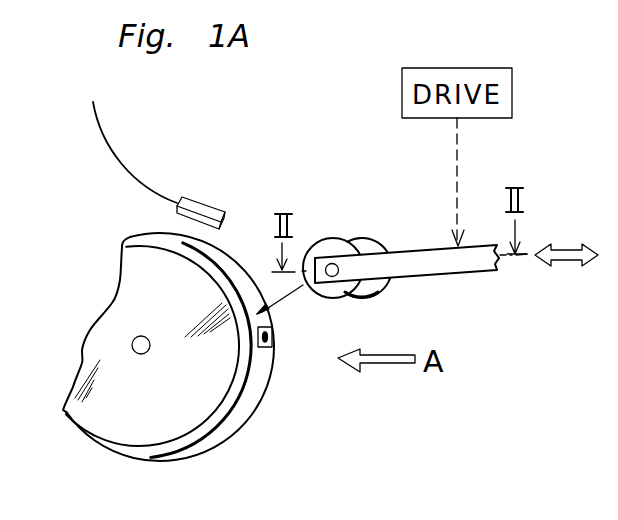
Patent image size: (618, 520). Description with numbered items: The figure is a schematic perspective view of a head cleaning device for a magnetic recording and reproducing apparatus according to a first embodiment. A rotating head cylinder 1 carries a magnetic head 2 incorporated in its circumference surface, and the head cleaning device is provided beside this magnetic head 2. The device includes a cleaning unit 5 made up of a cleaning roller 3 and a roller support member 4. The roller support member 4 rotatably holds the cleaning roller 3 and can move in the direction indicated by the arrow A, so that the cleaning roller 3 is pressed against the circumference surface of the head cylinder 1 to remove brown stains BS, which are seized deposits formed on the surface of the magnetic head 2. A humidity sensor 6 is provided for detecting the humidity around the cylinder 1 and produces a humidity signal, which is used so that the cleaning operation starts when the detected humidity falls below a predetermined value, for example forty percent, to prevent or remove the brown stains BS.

The rotating head cylinder 1 is at (137, 417).
The magnetic head 2 is at (275, 352).
The cleaning roller 3 is at (357, 247).
The roller support member 4 is at (390, 262).
The cleaning unit 5 is at (401, 215).
The humidity sensor 6 is at (198, 207).
The brown stains BS is at (267, 320).